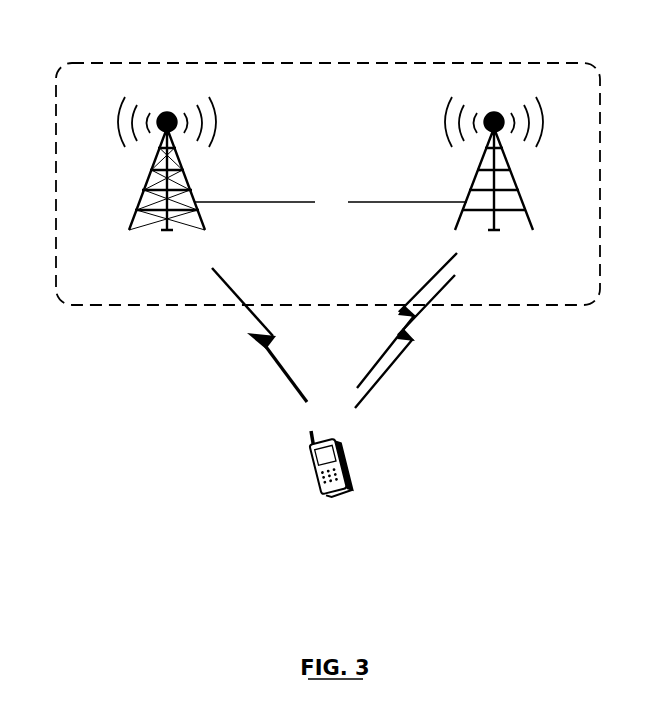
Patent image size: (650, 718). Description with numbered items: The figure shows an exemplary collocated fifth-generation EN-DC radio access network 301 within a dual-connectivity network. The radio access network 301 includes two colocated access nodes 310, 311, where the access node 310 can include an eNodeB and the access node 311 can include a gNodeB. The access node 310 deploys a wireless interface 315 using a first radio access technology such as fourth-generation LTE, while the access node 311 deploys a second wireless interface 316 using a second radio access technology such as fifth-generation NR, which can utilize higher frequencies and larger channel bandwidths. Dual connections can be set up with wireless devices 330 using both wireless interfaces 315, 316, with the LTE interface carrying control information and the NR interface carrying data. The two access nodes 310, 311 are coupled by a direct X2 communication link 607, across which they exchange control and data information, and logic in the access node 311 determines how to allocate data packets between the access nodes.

The radio access network 301 is at (130, 62).
The access node 310 is at (148, 192).
The access node 311 is at (514, 196).
The X2 interface link 607 is at (392, 202).
The wireless interface 315 is at (250, 339).
The wireless interface 316 is at (433, 348).
The wireless devices 330 is at (318, 487).